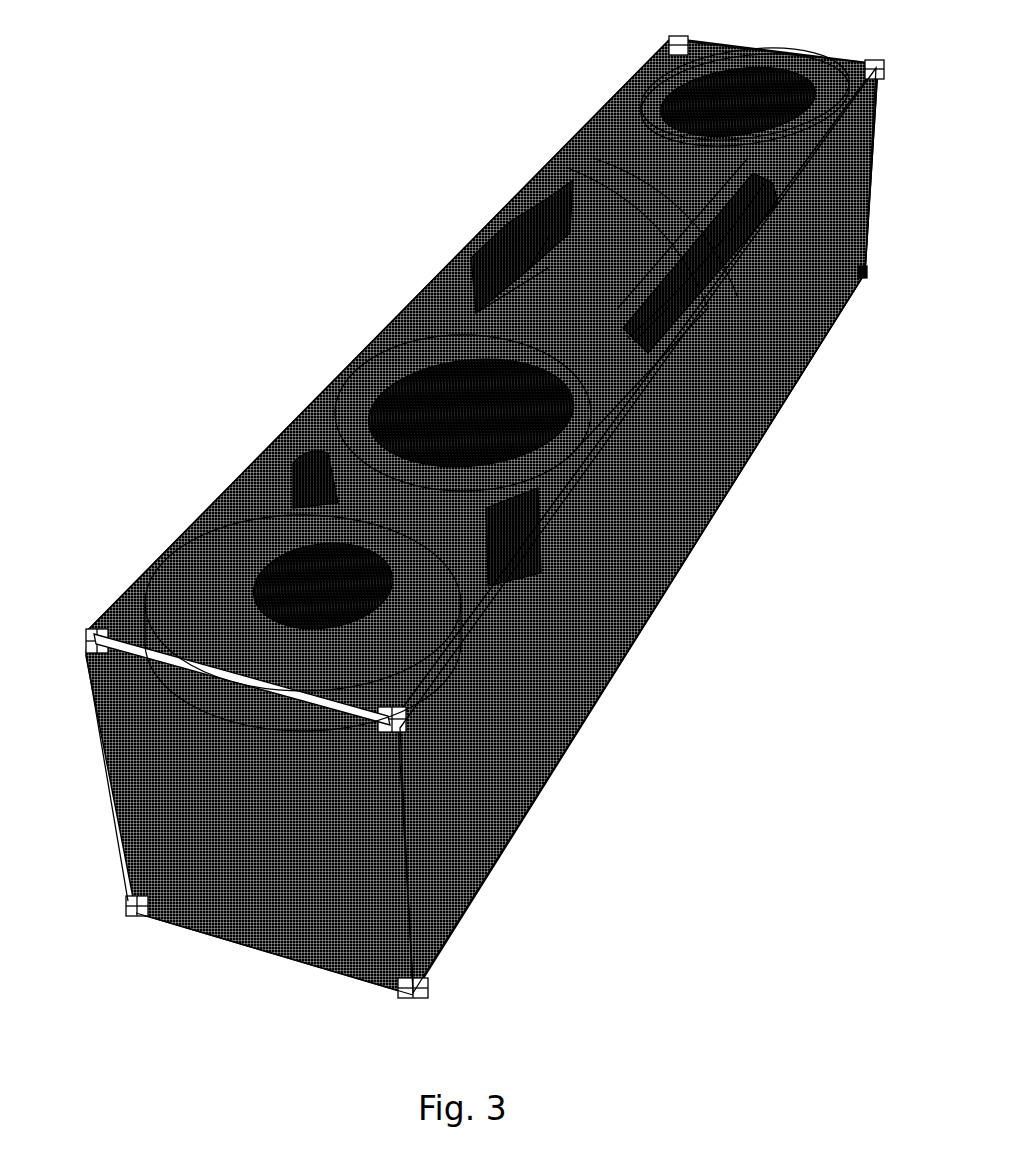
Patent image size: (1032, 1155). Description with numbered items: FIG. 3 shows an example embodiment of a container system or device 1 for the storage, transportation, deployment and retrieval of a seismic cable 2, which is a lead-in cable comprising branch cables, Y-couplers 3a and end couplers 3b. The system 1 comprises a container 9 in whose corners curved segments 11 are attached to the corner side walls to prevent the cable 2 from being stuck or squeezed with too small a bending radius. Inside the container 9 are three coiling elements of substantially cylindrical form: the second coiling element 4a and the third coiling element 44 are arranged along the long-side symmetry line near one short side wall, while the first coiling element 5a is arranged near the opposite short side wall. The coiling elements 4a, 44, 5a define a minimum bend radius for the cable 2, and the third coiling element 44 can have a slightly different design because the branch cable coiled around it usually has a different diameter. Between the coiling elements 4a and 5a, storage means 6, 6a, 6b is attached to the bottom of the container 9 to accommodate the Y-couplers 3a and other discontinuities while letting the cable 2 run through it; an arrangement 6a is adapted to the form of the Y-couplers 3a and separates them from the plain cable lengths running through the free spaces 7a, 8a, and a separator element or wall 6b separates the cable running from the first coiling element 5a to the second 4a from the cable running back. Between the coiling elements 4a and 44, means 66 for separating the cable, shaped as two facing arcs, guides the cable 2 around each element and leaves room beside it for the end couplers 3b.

The container system 1 is at (630, 849).
The seismic cable 2 is at (558, 452).
The Y-coupler 3a is at (525, 232).
The end coupler 3b is at (528, 528).
The second coiling element 4a is at (408, 403).
The first coiling element 5a is at (680, 92).
The storage means 6 is at (518, 290).
The arrangement of the storage means 6a is at (520, 278).
The separator element 6b is at (647, 295).
The free space 7a is at (698, 265).
The free space 8a is at (648, 255).
The container 9 is at (437, 858).
The curved segment 11 is at (145, 628).
The third coiling element 44 is at (300, 582).
The means for separating the cable 66 is at (300, 480).